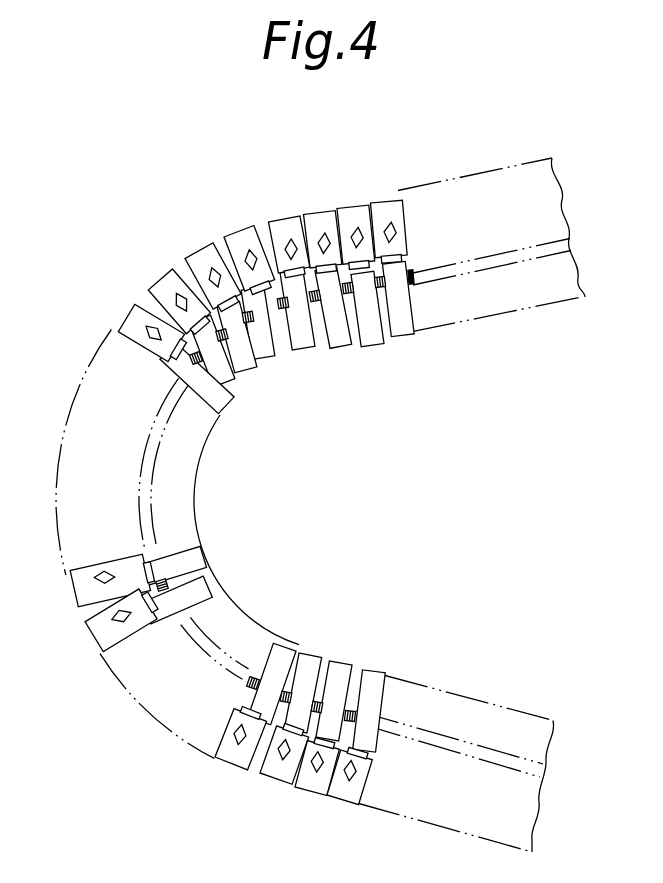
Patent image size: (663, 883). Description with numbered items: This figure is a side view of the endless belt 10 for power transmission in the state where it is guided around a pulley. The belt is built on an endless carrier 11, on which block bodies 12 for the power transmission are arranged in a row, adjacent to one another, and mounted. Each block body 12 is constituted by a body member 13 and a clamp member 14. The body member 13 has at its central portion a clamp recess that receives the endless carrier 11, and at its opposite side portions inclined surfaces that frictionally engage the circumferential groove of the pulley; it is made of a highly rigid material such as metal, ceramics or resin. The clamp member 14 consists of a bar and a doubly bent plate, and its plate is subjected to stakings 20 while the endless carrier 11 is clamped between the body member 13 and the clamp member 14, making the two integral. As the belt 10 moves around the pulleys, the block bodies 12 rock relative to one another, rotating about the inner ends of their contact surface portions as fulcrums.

The endless belt for power transmission 10 is at (320, 486).
The endless carrier 11 is at (413, 286).
The block body 12 is at (359, 480).
The body member 13 is at (403, 327).
The clamp member 14 is at (382, 200).
The staking 20 is at (399, 225).